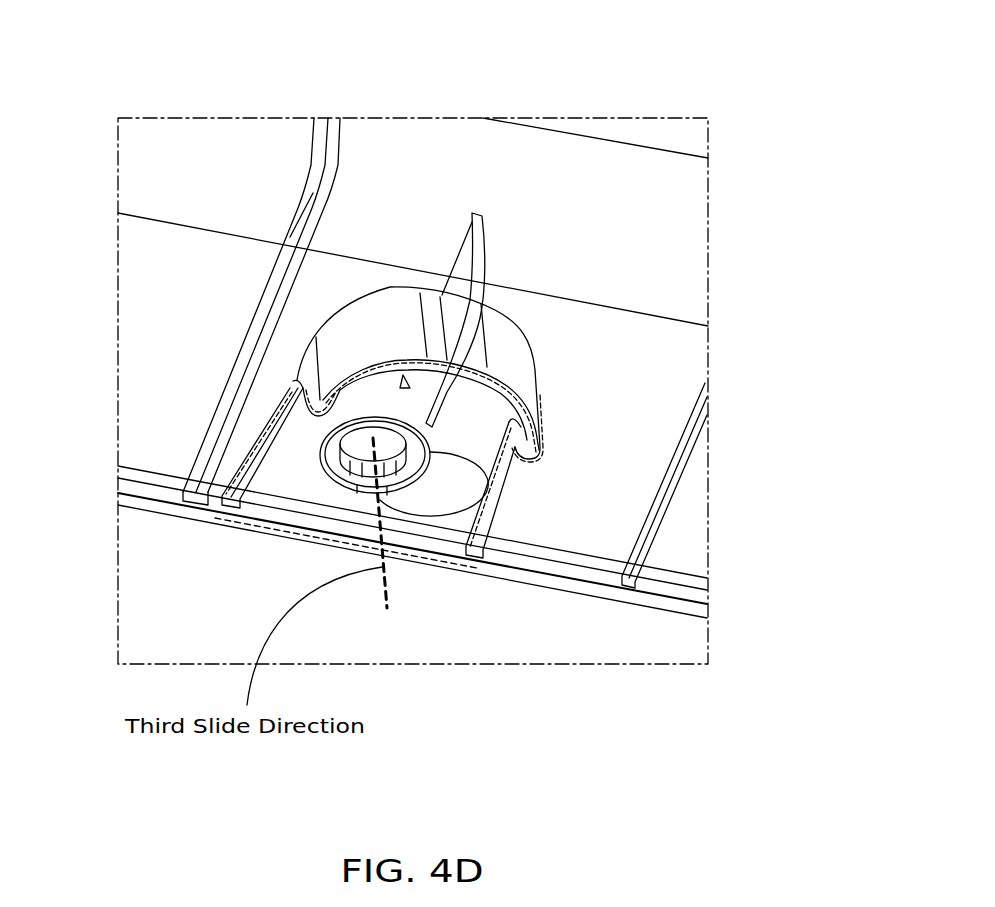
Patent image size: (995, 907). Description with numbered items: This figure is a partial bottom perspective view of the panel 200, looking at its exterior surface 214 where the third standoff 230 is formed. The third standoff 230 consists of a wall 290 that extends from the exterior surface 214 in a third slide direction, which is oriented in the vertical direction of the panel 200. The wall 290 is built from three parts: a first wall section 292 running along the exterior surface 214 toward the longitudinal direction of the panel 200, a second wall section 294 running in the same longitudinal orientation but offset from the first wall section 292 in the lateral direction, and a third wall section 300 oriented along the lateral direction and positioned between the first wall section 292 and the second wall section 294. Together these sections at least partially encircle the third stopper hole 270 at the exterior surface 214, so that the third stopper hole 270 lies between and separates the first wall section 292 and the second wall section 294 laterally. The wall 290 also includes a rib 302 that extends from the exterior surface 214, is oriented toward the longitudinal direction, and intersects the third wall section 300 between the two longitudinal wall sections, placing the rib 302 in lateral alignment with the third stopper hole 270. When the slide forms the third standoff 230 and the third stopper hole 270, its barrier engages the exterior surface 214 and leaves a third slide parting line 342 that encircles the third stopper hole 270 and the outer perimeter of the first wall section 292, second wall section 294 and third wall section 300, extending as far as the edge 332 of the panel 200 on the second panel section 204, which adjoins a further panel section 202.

The panel 200 is at (597, 160).
The first frame member 202 is at (675, 132).
The second panel section 204 is at (683, 540).
The exterior surface 214 is at (153, 348).
The third standoff 230 is at (503, 357).
The third stopper hole 270 is at (348, 475).
The wall 290 is at (535, 372).
The first wall section 292 is at (257, 437).
The second wall section 294 is at (492, 495).
The third wall section 300 is at (488, 356).
The rib 302 is at (462, 272).
The edge 332 is at (558, 594).
The third slide parting line 342 is at (383, 363).